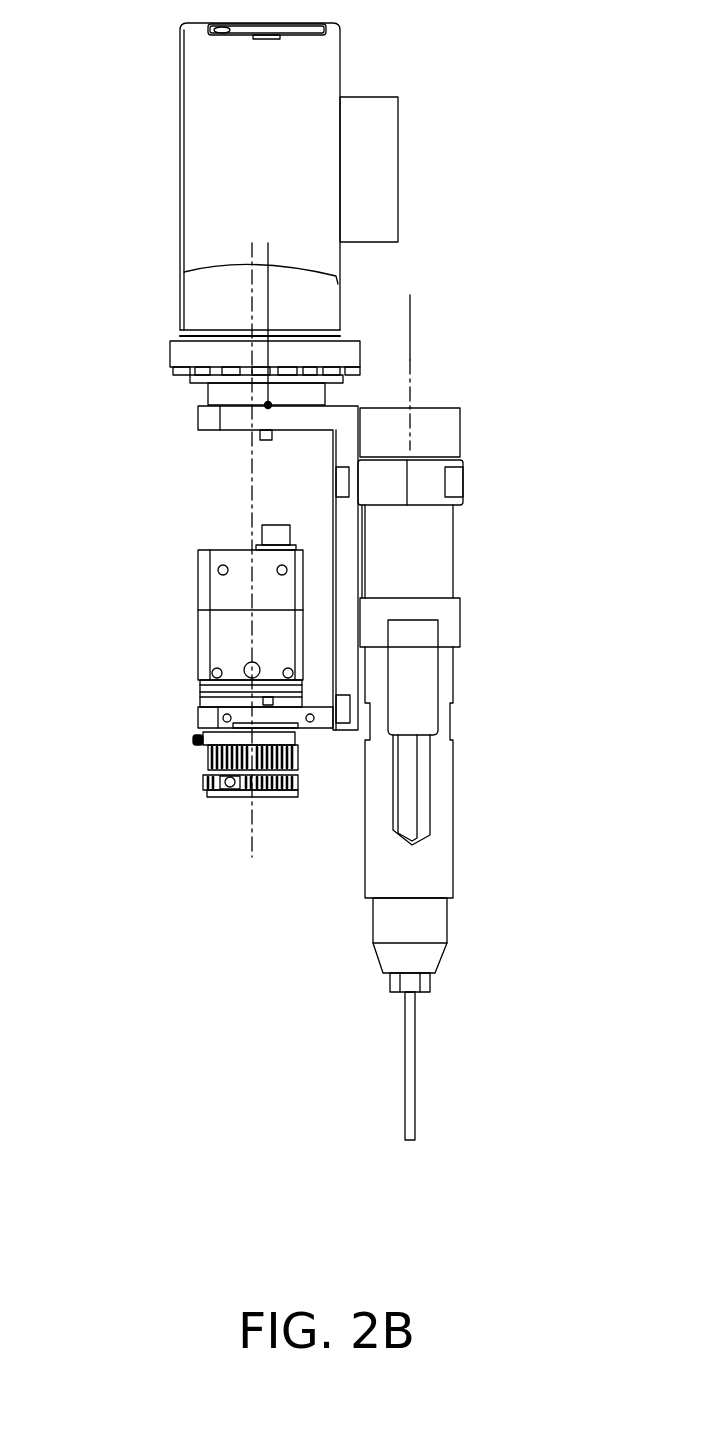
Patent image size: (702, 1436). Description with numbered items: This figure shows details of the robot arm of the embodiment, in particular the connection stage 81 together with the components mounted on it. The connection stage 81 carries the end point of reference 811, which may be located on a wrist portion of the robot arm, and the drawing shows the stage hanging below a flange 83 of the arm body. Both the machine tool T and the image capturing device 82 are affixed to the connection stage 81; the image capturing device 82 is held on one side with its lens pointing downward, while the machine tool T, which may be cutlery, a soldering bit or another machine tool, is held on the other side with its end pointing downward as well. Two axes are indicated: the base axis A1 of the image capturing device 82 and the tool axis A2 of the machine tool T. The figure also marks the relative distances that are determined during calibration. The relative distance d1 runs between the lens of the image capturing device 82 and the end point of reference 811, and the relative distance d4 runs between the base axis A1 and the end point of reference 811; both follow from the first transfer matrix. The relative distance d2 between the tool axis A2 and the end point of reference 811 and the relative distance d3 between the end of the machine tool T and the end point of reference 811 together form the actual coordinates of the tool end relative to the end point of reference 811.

The connection stage 81 is at (208, 417).
The end point of reference 811 is at (268, 405).
The image capturing device 82 is at (203, 760).
The flange of robot arm 83 is at (178, 353).
The machine tool T is at (445, 815).
The base axis A1 is at (248, 837).
The tool axis A2 is at (410, 347).
The relative distance d1 is at (195, 406).
The relative distance d2 is at (268, 305).
The relative distance d3 is at (360, 406).
The relative distance d4 is at (320, 252).